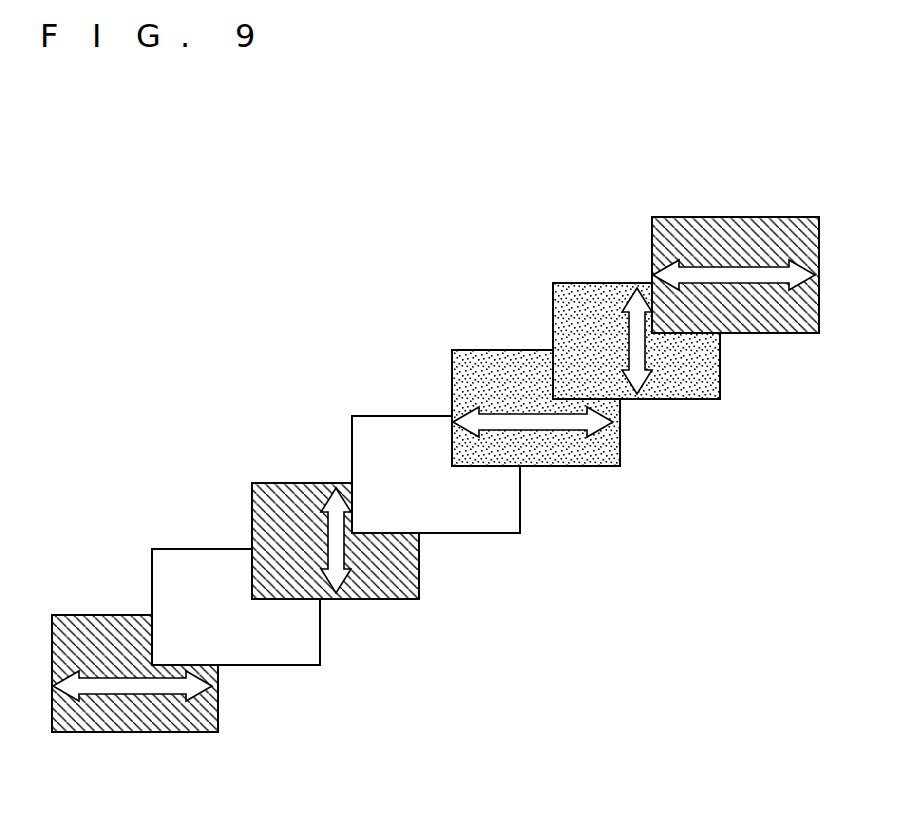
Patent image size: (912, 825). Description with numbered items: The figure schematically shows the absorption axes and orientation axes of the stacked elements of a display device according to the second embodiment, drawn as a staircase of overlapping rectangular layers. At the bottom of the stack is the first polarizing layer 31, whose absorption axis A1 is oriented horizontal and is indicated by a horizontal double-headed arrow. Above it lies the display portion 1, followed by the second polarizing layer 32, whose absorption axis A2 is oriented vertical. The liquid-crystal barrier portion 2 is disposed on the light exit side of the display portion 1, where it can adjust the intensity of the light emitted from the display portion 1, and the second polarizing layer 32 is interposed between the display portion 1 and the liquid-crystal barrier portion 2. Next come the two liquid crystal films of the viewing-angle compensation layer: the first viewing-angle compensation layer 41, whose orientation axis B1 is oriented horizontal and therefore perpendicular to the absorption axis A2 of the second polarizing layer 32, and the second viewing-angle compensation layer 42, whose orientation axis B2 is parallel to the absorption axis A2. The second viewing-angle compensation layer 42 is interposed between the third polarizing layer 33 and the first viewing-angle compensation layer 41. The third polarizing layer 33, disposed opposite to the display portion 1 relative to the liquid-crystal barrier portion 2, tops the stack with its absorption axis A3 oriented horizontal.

The first polarizing layer 31 is at (173, 722).
The display portion 1 is at (277, 657).
The second polarizing layer 32 is at (380, 590).
The liquid-crystal barrier portion 2 is at (483, 520).
The first viewing-angle compensation layer 41 is at (588, 458).
The second viewing-angle compensation layer 42 is at (691, 390).
The third polarizing layer 33 is at (793, 323).
The absorption axis A1 is at (92, 687).
The absorption axis A2 is at (310, 522).
The orientation axis B1 is at (496, 422).
The orientation axis B2 is at (636, 340).
The absorption axis A3 is at (728, 278).